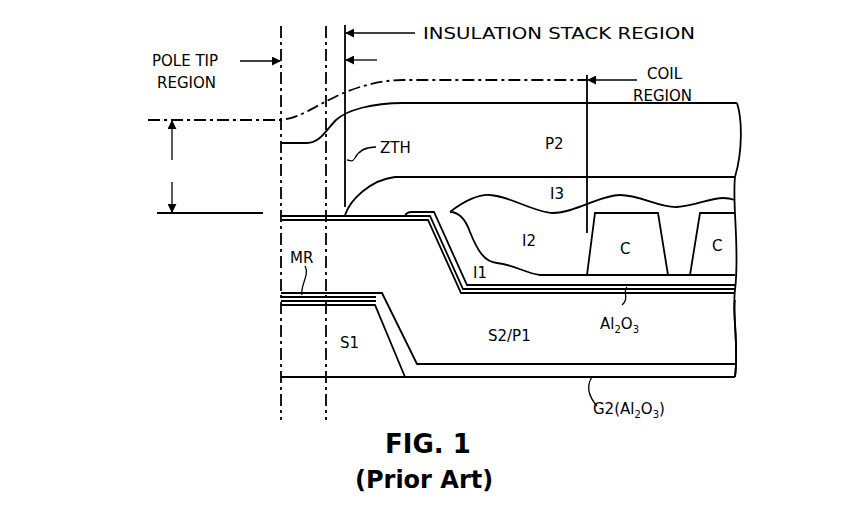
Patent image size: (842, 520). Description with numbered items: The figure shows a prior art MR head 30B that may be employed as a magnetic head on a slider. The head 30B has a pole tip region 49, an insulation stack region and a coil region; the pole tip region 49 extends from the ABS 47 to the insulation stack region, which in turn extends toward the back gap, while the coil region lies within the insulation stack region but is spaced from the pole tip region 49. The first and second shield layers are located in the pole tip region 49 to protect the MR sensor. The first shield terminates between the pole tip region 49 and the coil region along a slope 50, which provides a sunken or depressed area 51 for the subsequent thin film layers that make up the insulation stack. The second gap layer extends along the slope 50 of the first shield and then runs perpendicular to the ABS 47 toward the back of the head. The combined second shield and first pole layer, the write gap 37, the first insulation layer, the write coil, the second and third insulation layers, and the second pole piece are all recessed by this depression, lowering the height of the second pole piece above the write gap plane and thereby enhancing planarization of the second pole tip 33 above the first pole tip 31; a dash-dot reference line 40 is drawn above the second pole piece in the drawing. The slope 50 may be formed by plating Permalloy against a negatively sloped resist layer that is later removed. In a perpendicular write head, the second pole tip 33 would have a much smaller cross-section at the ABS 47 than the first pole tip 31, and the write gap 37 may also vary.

The head 30B is at (719, 96).
The second pole tip PT2 33 is at (281, 163).
The zero throat height reference line / resist top 40 is at (503, 80).
The ABS 47 is at (237, 213).
The pole tip region 49 is at (281, 190).
The write gap 37 is at (281, 218).
The first pole tip PT1 31 is at (281, 283).
The slope 50 is at (396, 342).
The sunken or depressed area 51 is at (728, 352).